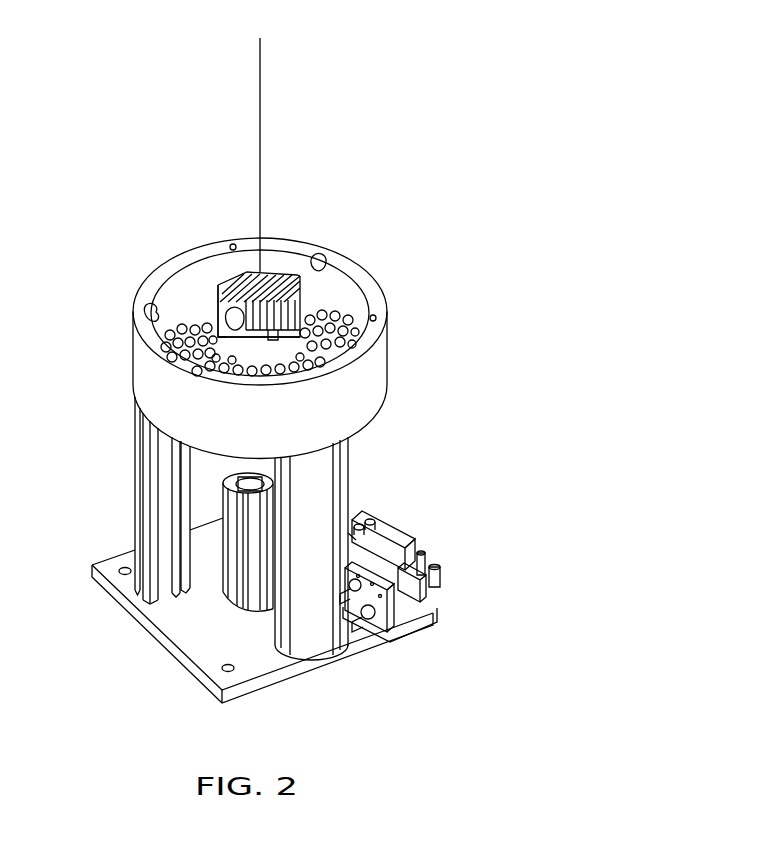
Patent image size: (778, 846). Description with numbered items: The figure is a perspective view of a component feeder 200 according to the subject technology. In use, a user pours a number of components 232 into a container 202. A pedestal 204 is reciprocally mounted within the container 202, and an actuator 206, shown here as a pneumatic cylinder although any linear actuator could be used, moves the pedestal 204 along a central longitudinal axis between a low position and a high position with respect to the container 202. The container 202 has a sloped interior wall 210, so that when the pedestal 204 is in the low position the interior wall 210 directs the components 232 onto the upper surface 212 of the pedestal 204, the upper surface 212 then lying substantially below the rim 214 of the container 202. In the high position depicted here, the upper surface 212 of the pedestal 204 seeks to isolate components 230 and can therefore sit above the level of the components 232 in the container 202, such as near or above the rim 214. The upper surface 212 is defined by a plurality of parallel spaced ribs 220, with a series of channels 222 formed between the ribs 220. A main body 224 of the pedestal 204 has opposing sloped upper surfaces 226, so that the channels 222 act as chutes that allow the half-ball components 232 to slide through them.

The feeder 200 is at (381, 200).
The container 202 is at (375, 363).
The pedestal 204 is at (233, 323).
The actuator 206 is at (185, 568).
The sloped interior wall 210 is at (340, 318).
The upper surface 212 is at (280, 272).
The rim 214 is at (350, 269).
The ribs 220 is at (230, 287).
The channels 222 is at (240, 334).
The main body 224 is at (250, 358).
The sloped upper surfaces 226 is at (273, 335).
The components 230 is at (217, 290).
The components 232 is at (167, 340).